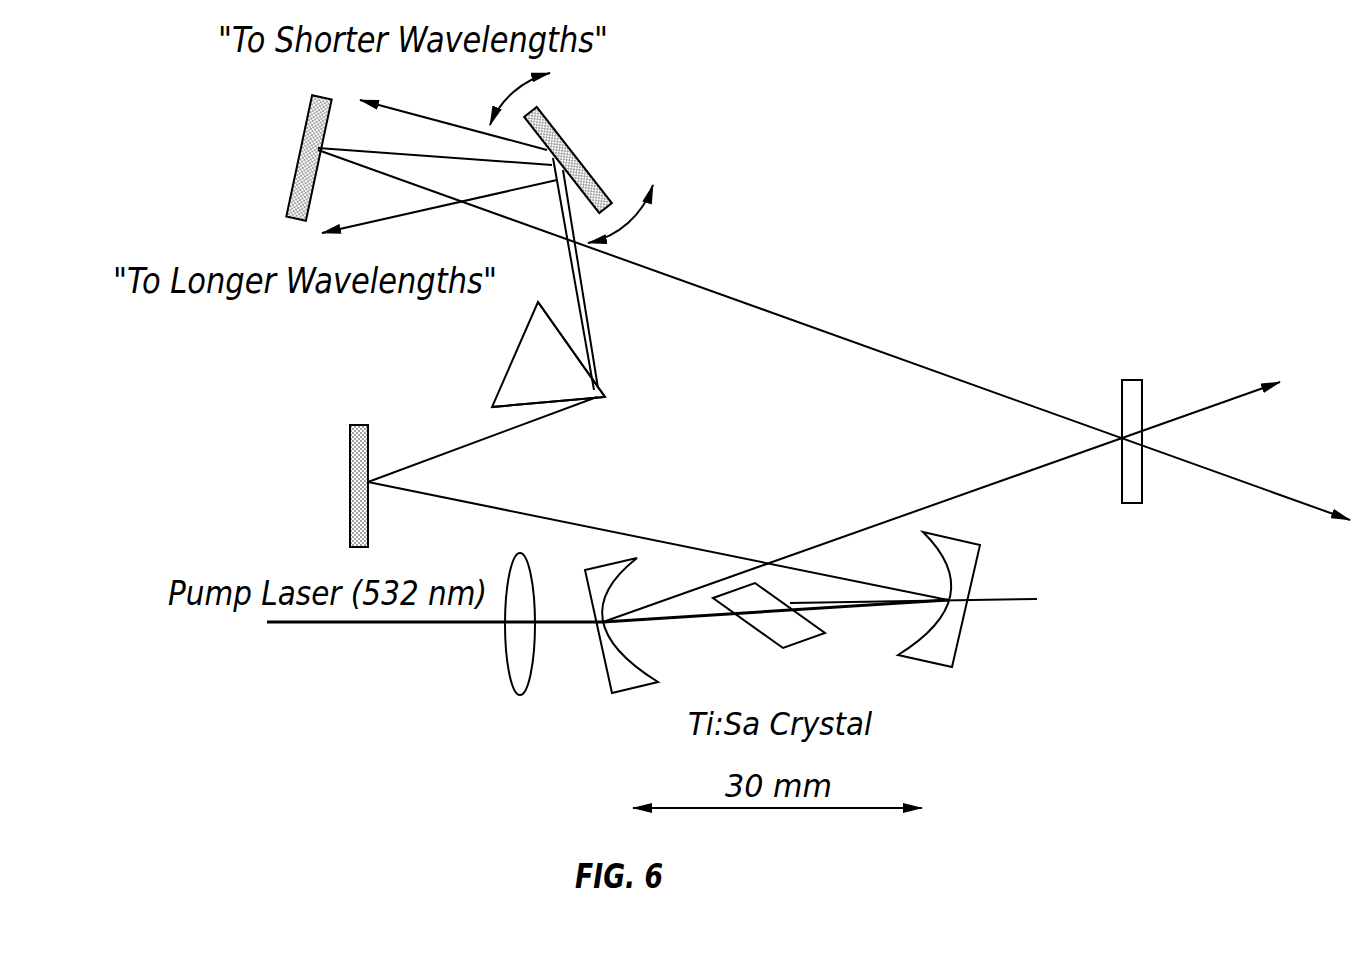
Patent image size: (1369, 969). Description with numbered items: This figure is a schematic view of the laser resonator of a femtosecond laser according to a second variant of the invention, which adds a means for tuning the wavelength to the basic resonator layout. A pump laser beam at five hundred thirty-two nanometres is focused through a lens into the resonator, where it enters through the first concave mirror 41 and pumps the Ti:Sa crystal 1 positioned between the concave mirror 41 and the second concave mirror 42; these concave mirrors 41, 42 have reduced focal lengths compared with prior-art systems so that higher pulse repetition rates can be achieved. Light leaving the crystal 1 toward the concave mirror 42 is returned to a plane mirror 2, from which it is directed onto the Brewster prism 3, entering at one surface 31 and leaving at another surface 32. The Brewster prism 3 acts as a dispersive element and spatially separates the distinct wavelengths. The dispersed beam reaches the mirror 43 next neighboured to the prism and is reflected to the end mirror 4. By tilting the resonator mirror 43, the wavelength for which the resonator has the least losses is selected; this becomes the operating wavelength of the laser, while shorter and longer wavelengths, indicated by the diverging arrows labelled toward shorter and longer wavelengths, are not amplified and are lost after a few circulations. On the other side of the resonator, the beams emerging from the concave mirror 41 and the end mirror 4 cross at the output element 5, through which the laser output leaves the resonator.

The Ti:Sa crystal 1 is at (807, 637).
The plane mirror 2 is at (348, 448).
The Brewster prism 3 is at (534, 354).
The prism entrance surface 31 is at (599, 349).
The prism exit surface 32 is at (561, 425).
The end mirror 4 is at (295, 151).
The concave mirror 41 is at (617, 653).
The concave mirror 42 is at (940, 626).
The mirror 43 is at (580, 160).
The output coupler plate 5 is at (1132, 420).